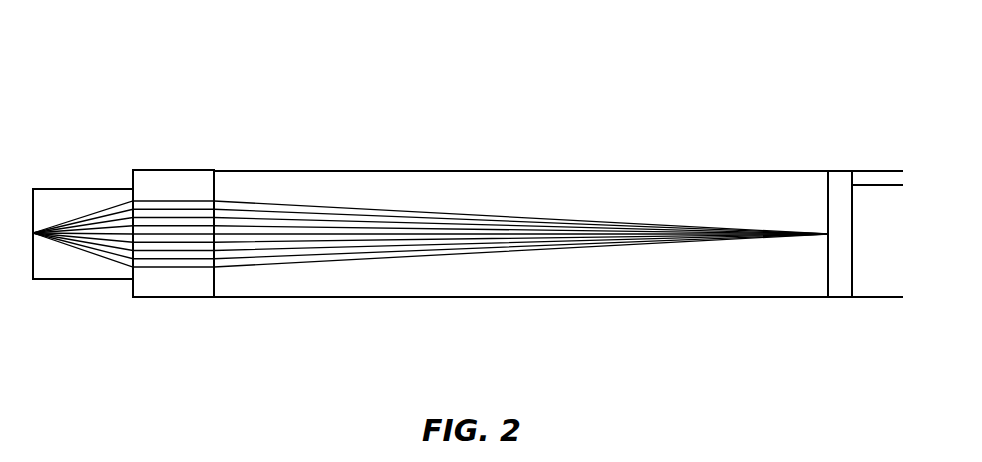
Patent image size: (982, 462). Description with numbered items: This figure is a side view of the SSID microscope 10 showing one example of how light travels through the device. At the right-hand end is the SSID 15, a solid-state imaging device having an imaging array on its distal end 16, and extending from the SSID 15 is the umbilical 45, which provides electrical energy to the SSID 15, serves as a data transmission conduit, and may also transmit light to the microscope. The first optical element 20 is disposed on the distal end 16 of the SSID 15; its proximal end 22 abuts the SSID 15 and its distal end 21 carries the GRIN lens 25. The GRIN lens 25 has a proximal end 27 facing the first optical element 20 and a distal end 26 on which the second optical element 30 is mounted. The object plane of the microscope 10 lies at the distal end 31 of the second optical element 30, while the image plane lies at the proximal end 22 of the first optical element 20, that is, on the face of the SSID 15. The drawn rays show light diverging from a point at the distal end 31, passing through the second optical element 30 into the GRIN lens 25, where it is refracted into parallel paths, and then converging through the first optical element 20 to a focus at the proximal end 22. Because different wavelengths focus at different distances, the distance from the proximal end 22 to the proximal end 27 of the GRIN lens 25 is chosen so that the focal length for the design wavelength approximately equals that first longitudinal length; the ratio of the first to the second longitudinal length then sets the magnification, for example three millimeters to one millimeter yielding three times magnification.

The miniature device for magnifying an object 10 is at (673, 105).
The SSID 15 is at (838, 273).
The distal end of the SSID 16 is at (825, 190).
The first optical element 20 is at (557, 273).
The distal end of the first optical element 21 is at (230, 298).
The proximal end of the first optical element 22 is at (828, 215).
The GRIN lens 25 is at (164, 272).
The distal end of the GRIN lens 26 is at (130, 172).
The proximal end of the GRIN lens 27 is at (216, 185).
The second optical element 30 is at (55, 202).
The distal end of the second optical element 31 is at (30, 244).
The umbilical 45 is at (885, 177).